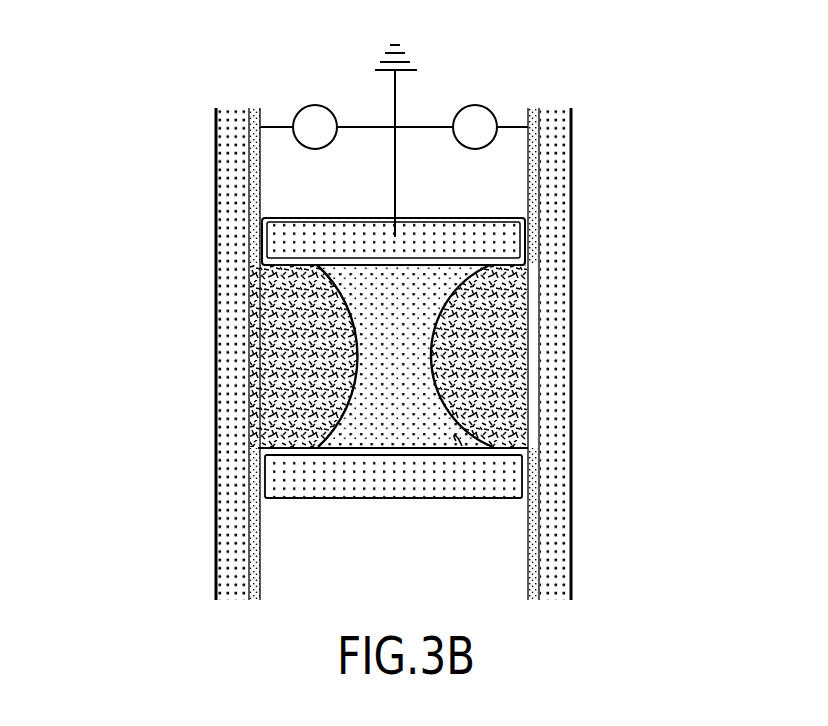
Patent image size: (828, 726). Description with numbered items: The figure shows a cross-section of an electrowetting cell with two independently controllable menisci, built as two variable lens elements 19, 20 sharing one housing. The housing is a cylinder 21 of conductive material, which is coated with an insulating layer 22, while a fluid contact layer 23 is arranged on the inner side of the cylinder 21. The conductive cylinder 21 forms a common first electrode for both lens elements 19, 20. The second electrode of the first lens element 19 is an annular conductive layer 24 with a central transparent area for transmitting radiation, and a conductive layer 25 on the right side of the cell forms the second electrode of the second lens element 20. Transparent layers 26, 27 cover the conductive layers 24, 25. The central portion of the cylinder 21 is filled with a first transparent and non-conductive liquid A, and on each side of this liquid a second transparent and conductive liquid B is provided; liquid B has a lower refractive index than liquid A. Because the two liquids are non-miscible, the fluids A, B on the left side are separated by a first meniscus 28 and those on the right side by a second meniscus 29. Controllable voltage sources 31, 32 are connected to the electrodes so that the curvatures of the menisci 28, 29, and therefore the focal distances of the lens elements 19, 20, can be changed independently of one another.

The first variable lens element 19 is at (166, 358).
The second variable lens element 20 is at (611, 354).
The cylinder 21 is at (347, 477).
The insulating layer 22 is at (423, 446).
The fluid contact layer 23 is at (455, 437).
The annular conductive layer 24 is at (245, 573).
The conductive layer 25 is at (523, 265).
The transparent layer 26 is at (233, 522).
The transparent layer 27 is at (552, 183).
The first meniscus 28 is at (340, 302).
The second meniscus 29 is at (448, 303).
The controllable voltage source 31 is at (298, 117).
The controllable voltage source 32 is at (490, 107).
The first liquid A is at (410, 380).
The second liquid B is at (278, 380).